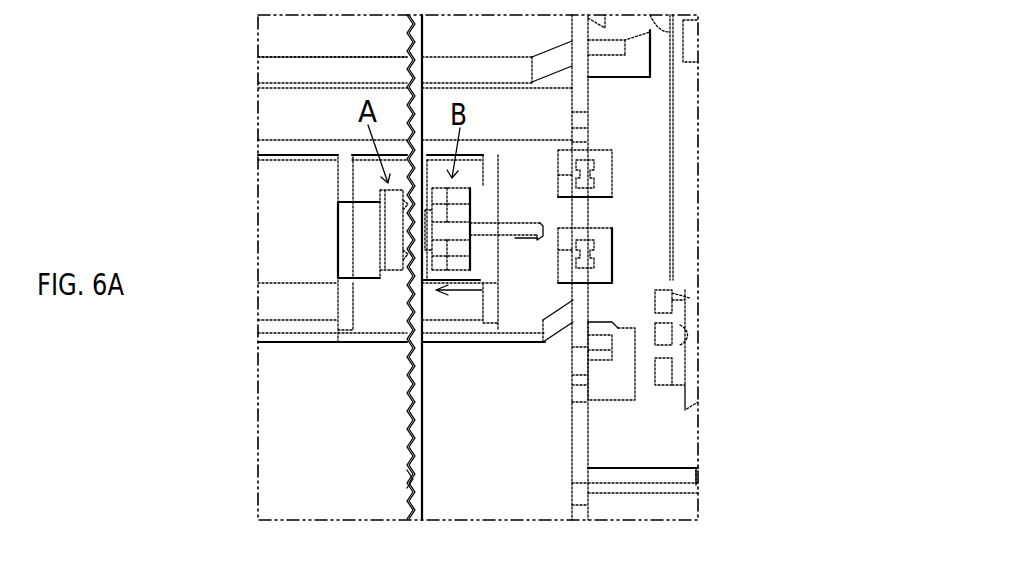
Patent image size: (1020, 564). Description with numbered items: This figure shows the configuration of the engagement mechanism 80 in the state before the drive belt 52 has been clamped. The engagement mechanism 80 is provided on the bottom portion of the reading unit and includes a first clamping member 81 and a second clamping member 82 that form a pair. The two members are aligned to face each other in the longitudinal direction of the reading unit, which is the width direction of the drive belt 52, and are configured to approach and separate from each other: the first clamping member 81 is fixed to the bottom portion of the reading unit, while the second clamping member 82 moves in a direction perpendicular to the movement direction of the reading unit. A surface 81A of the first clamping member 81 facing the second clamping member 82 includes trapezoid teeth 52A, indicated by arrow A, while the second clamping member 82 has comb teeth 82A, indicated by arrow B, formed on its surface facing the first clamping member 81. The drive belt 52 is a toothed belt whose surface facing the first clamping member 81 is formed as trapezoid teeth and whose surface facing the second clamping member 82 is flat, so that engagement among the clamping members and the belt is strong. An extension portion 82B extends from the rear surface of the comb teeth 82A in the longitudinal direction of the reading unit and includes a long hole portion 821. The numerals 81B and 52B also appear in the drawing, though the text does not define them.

The engagement mechanism 80 is at (376, 69).
The first clamping member 81 is at (380, 237).
The surface of the first clamping member 81A is at (417, 239).
The engaging protrusion 81B is at (404, 206).
The second clamping member 82 is at (547, 205).
The comb teeth 82A is at (529, 86).
The extension portion 82B is at (516, 224).
The long hole portion 821 is at (524, 245).
The drive belt 52 is at (407, 437).
The trapezoid teeth 52A is at (396, 483).
The rack base 52B is at (436, 503).